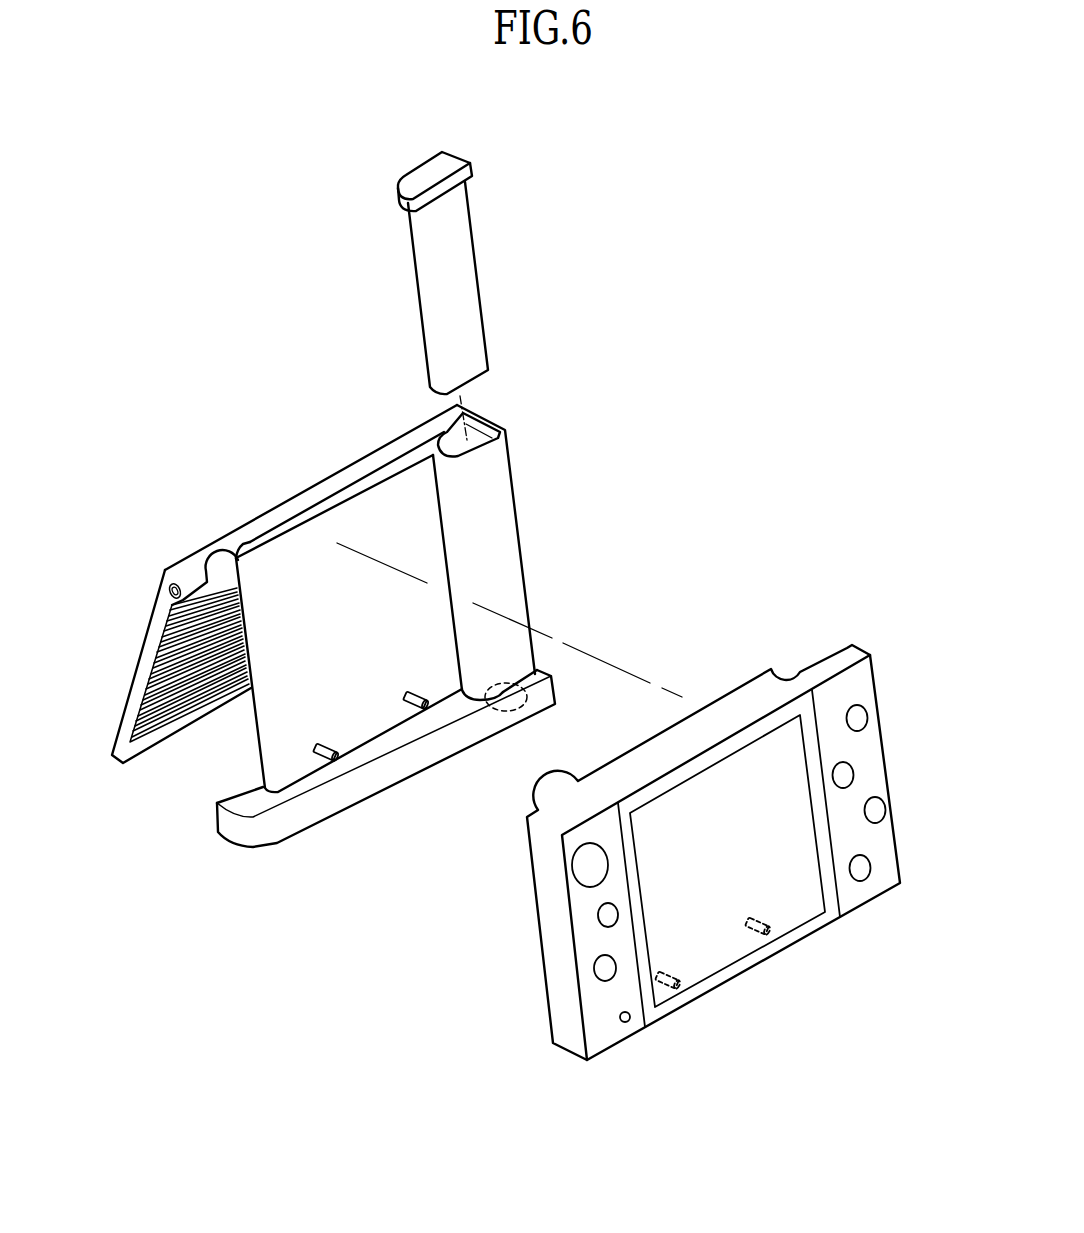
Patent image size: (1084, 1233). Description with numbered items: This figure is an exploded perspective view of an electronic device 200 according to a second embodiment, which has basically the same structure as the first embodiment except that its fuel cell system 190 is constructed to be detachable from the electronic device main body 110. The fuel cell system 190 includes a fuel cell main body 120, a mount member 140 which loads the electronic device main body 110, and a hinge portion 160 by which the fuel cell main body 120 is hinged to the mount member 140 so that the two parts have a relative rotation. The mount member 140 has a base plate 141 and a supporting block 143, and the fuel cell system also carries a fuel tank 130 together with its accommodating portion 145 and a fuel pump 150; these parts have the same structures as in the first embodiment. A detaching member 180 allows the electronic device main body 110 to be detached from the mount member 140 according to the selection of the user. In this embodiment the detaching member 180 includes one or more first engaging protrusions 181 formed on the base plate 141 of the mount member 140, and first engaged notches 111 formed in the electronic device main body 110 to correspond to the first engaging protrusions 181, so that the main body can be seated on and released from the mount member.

The electronic device 200 is at (306, 275).
The electronic device main body 110 is at (716, 850).
The first engaged notches 111 is at (663, 990).
The fuel cell main body 120 is at (122, 637).
The fuel tank 130 is at (460, 275).
The mount member 140 is at (368, 783).
The base plate 141 is at (462, 760).
The supporting block 143 is at (345, 807).
The accommodating portion 145 is at (478, 438).
The fuel pump 150 is at (527, 703).
The hinge portion 160 is at (303, 498).
The detaching member 180 is at (320, 775).
The first engaging protrusions 181 is at (410, 710).
The fuel cell system 190 is at (423, 570).